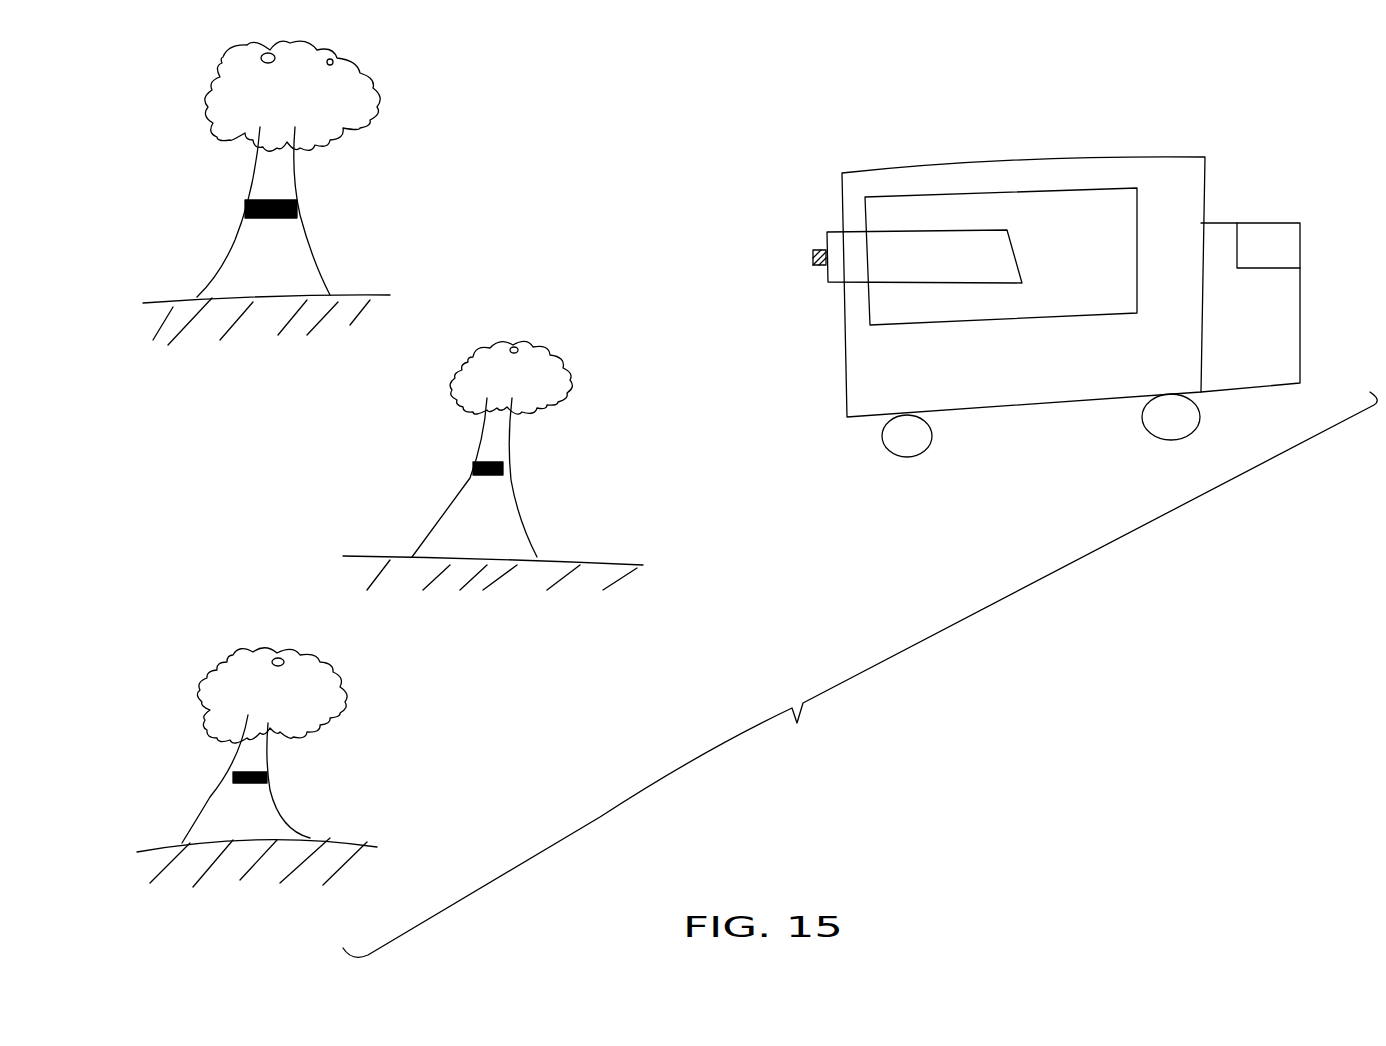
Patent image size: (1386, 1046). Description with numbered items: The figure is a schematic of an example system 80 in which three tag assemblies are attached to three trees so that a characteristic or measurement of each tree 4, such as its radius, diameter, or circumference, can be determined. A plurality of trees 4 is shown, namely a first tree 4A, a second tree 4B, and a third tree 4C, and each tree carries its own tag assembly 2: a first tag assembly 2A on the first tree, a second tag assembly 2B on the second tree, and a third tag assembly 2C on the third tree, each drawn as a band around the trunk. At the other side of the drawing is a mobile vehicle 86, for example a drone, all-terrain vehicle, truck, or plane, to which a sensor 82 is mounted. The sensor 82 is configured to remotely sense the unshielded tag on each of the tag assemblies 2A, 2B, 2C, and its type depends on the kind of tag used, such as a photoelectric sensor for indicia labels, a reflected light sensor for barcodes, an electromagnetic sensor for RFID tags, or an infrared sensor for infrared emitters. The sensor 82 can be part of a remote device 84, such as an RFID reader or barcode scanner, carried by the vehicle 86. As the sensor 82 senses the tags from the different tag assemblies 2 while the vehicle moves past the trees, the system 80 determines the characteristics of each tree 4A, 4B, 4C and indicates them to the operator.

The tag assembly 2 is at (343, 211).
The first tag assembly 2A is at (246, 207).
The second tag assembly 2B is at (505, 466).
The third tag assembly 2C is at (268, 778).
The tree 4 is at (395, 107).
The first tree 4A is at (268, 165).
The second tree 4B is at (498, 435).
The third tree 4C is at (265, 752).
The system 80 is at (860, 674).
The sensor 82 is at (917, 256).
The remote device 84 is at (1001, 256).
The mobile vehicle 86 is at (1177, 167).